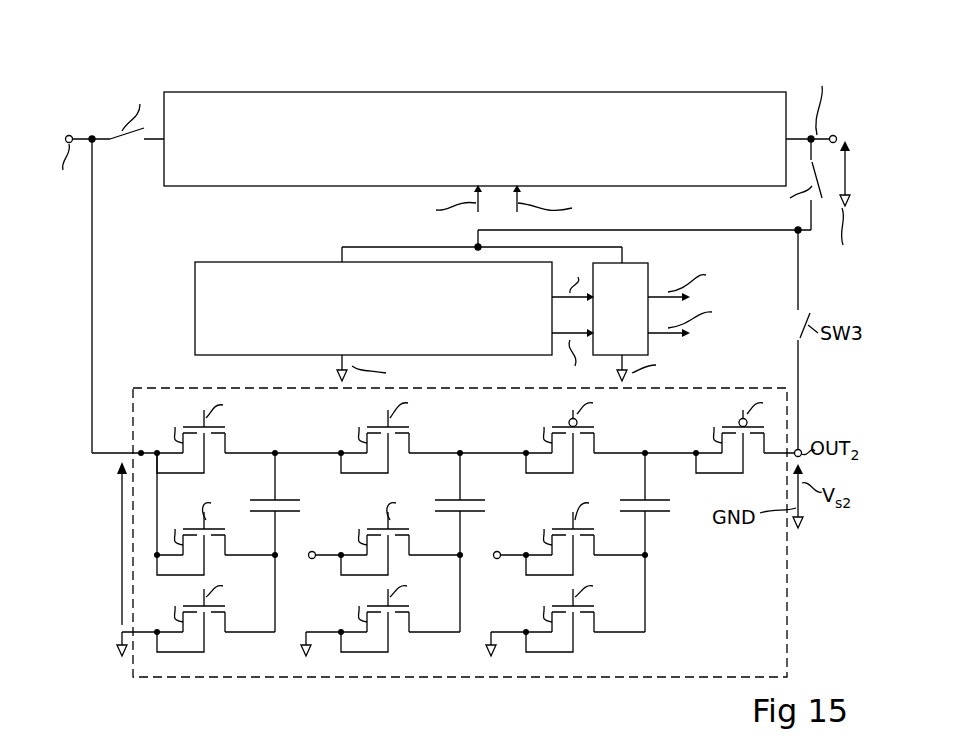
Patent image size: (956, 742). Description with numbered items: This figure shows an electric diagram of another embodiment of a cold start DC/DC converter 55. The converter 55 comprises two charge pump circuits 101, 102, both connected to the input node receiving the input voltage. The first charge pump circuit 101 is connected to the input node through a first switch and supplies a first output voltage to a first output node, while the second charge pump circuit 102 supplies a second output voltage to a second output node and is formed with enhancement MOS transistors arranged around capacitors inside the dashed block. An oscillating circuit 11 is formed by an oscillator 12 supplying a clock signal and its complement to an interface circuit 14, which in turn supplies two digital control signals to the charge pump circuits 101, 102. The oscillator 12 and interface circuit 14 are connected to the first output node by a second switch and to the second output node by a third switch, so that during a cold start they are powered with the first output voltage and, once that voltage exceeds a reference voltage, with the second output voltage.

The converter 55 is at (97, 102).
The charge pump circuit 101 is at (326, 88).
The oscillating circuit 11 is at (188, 325).
The oscillator 12 is at (232, 261).
The interface circuit 14 is at (648, 278).
The charge pump circuit 102 is at (478, 682).